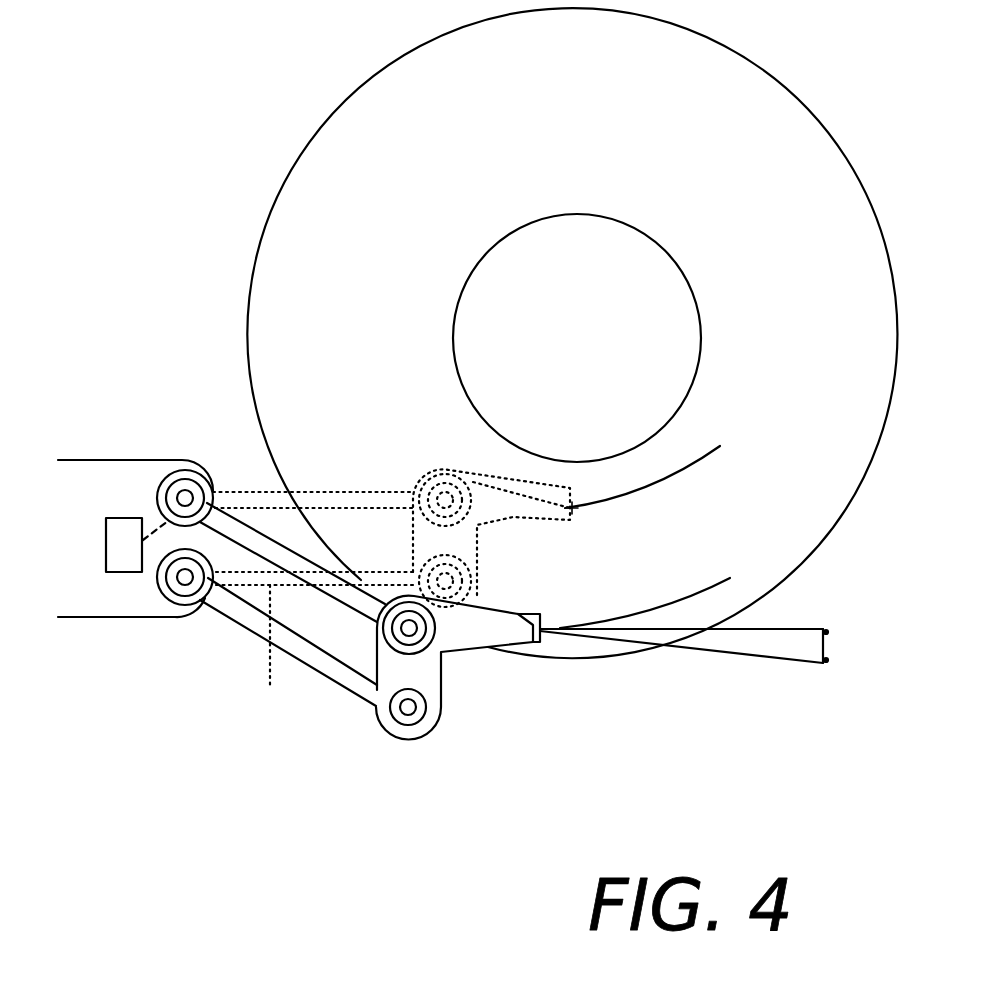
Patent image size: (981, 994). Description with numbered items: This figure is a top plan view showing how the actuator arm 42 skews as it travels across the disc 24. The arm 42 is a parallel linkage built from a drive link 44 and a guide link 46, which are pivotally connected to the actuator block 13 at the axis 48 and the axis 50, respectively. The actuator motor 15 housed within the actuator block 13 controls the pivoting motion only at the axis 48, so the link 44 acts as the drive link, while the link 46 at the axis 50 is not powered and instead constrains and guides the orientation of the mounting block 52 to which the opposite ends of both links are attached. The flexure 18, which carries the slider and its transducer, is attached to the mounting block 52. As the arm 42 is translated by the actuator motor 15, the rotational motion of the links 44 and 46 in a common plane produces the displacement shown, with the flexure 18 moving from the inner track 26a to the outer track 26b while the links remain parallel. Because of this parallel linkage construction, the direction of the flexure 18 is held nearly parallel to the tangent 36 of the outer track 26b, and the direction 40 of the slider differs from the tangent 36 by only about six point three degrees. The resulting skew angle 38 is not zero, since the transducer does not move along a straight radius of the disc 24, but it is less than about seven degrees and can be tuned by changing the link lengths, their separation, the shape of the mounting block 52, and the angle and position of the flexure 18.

The actuator block 13 is at (114, 477).
The actuator motor 15 is at (128, 545).
The flexure 18 is at (573, 508).
The disc 24 is at (722, 181).
The inner track 26a is at (700, 452).
The outer track 26b is at (675, 602).
The tangent 36 is at (792, 628).
The skew angle 38 is at (828, 647).
The direction of the slider 40 is at (780, 659).
The arm 42 is at (186, 736).
The drive link 44 is at (318, 577).
The guide link 46 is at (293, 643).
The axis 48 is at (184, 497).
The axis 50 is at (181, 588).
The mounting block 52 is at (495, 625).